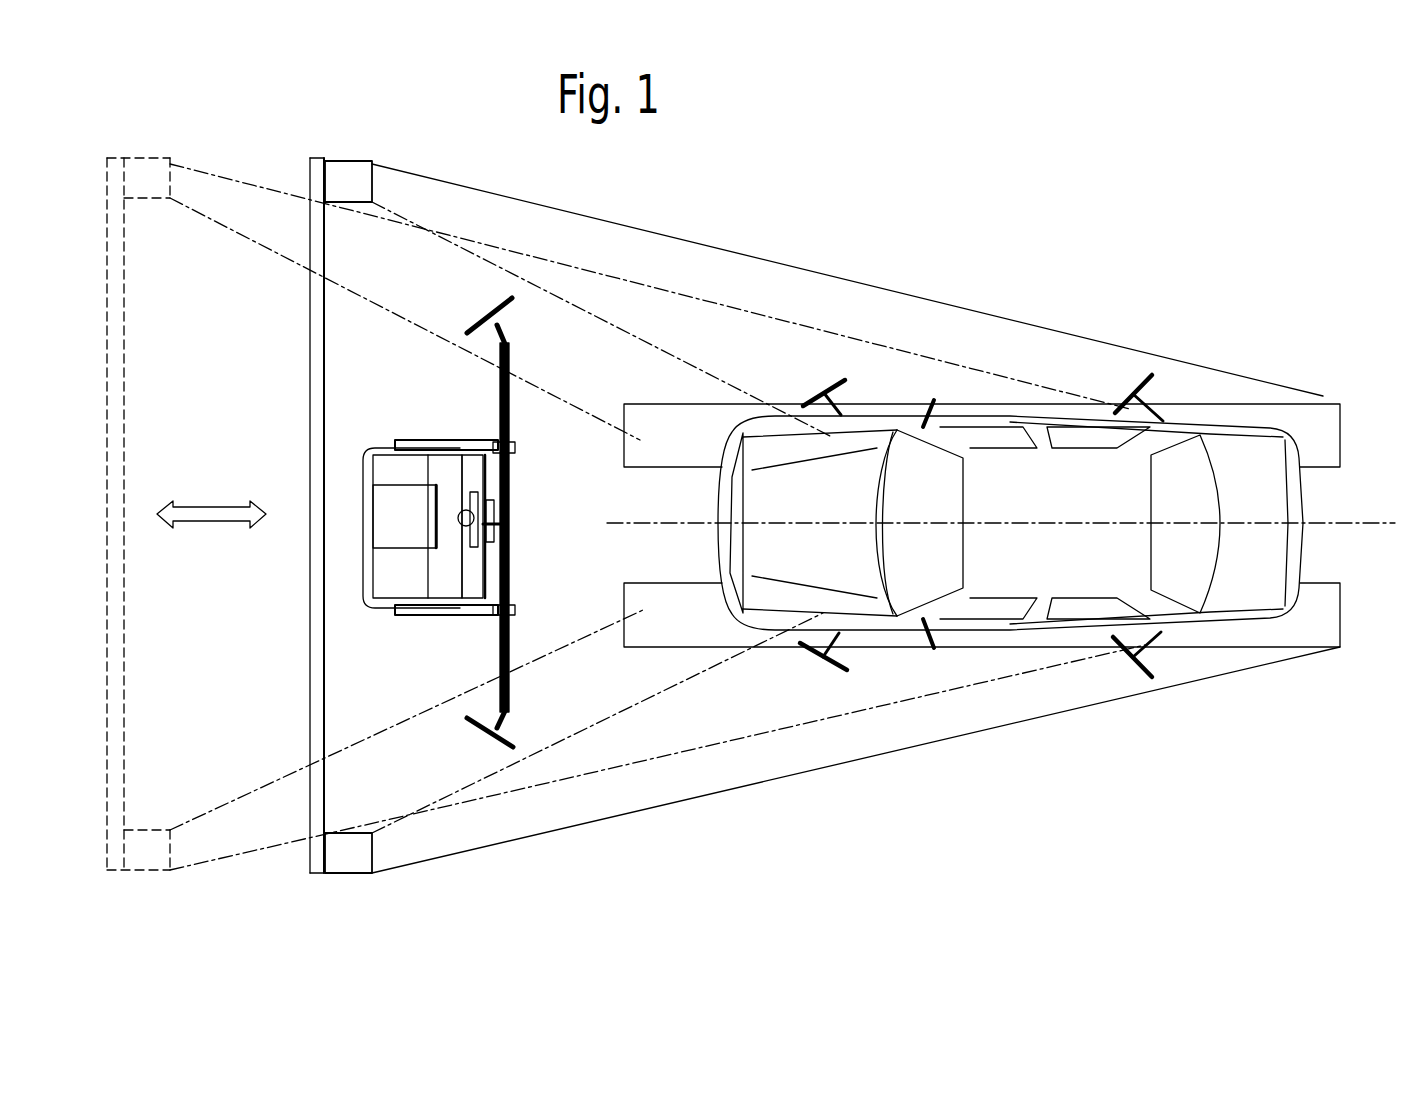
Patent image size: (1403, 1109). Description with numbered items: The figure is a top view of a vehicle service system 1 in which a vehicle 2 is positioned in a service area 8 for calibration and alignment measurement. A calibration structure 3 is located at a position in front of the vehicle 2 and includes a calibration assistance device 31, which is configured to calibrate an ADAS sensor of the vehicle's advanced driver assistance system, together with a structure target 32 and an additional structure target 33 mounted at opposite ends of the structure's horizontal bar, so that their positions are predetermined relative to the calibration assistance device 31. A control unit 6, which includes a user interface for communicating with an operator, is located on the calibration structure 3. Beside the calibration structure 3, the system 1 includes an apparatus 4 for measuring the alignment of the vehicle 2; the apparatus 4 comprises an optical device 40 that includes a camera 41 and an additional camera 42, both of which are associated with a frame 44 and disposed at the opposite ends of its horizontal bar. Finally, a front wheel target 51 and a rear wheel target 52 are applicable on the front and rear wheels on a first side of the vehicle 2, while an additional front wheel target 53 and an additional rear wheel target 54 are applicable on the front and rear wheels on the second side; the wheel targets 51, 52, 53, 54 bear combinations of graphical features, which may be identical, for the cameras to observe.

The vehicle service system 1 is at (820, 228).
The vehicle 2 is at (1050, 508).
The calibration structure 3 is at (465, 432).
The apparatus for measuring the alignment of the vehicle 4 is at (298, 383).
The control unit 6 is at (409, 531).
The service area 8 is at (1022, 398).
The calibration assistance device 31 is at (514, 563).
The structure target 32 is at (468, 730).
The additional structure target 33 is at (471, 318).
The optical device 40 is at (328, 878).
The camera 41 is at (355, 849).
The additional camera 42 is at (350, 180).
The frame 44 is at (318, 653).
The front wheel target 51 is at (812, 655).
The rear wheel target 52 is at (1110, 665).
The additional front wheel target 53 is at (820, 386).
The additional rear wheel target 54 is at (1128, 388).